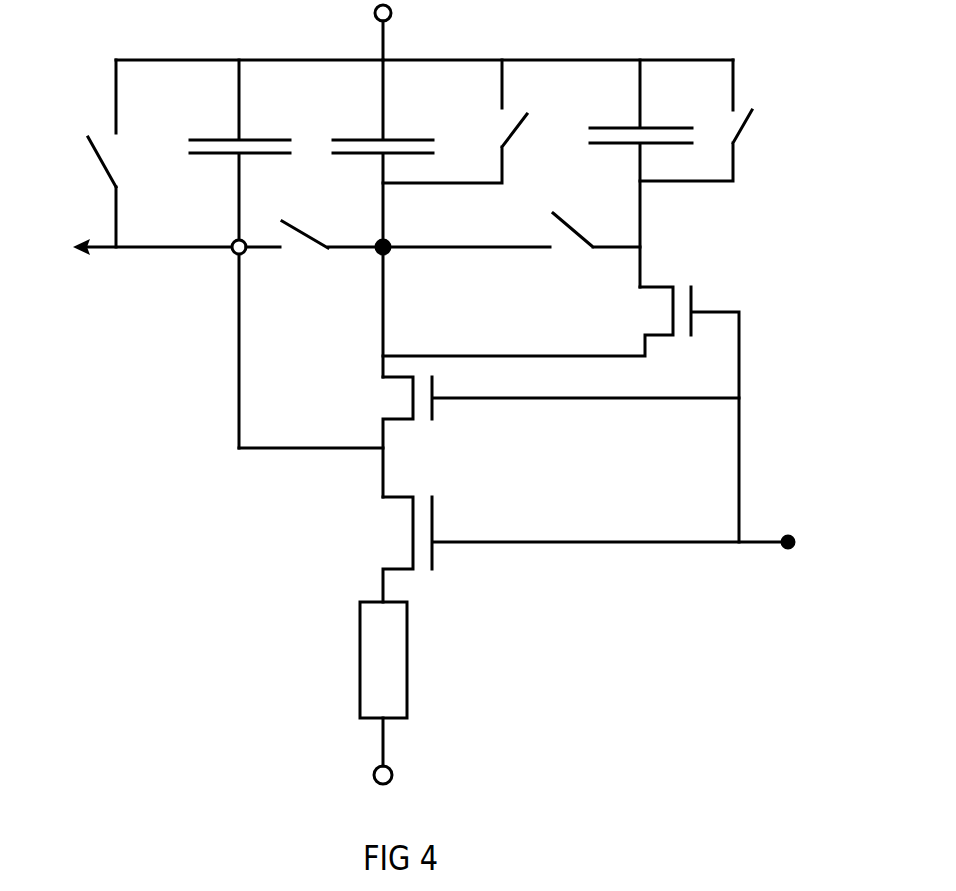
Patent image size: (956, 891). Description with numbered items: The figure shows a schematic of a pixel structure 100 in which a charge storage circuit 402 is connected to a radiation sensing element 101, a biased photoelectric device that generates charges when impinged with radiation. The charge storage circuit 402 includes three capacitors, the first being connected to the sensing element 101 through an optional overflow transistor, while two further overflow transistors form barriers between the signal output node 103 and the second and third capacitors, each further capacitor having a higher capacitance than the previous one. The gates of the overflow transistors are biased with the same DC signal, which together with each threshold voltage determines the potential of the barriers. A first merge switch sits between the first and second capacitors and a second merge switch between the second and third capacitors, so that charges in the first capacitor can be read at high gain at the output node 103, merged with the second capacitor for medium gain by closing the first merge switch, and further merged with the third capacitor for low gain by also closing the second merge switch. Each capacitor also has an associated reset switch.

The pixel structure 100 is at (150, 569).
The radiation sensing element 101 is at (405, 660).
The signal output node 103 is at (108, 254).
The charge storage circuit 402 is at (523, 52).